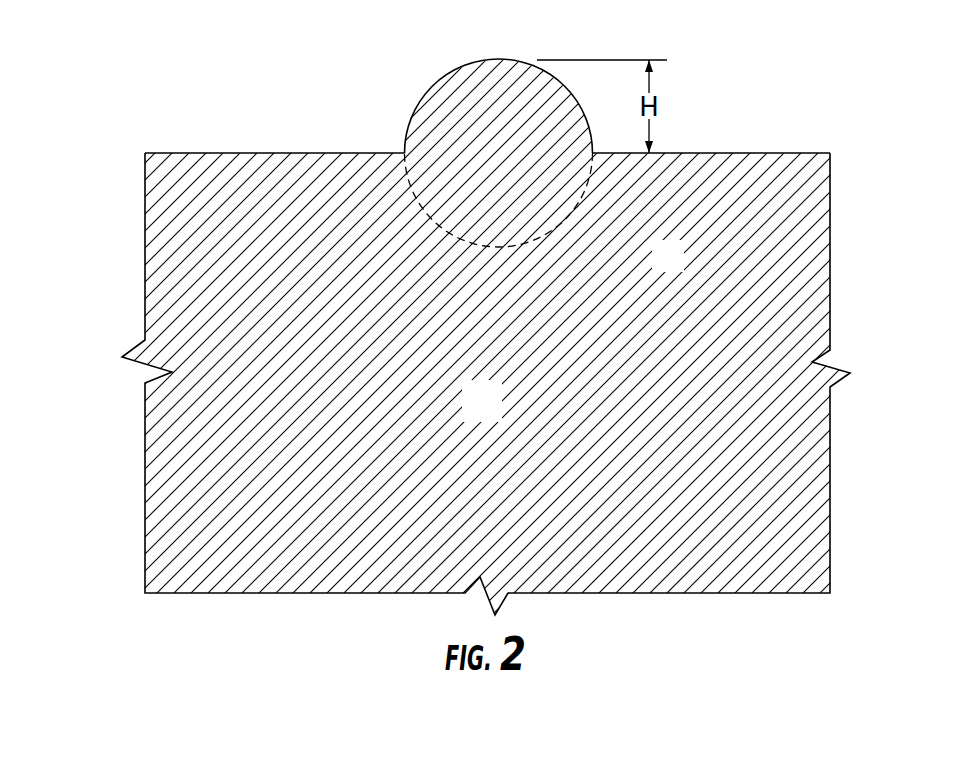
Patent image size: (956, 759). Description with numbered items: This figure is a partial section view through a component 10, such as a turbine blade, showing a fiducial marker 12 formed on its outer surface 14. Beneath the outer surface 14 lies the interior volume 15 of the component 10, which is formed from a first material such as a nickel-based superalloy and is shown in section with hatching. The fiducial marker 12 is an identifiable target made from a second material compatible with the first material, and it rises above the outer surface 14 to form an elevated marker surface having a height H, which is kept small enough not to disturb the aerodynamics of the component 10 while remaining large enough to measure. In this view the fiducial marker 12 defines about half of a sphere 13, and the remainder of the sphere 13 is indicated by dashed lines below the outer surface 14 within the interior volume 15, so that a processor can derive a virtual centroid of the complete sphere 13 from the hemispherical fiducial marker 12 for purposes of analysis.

The component 10 is at (478, 348).
The fiducial marker 12 is at (478, 82).
The sphere 13 is at (562, 228).
The outer surface 14 is at (244, 142).
The interior volume 15 is at (470, 414).